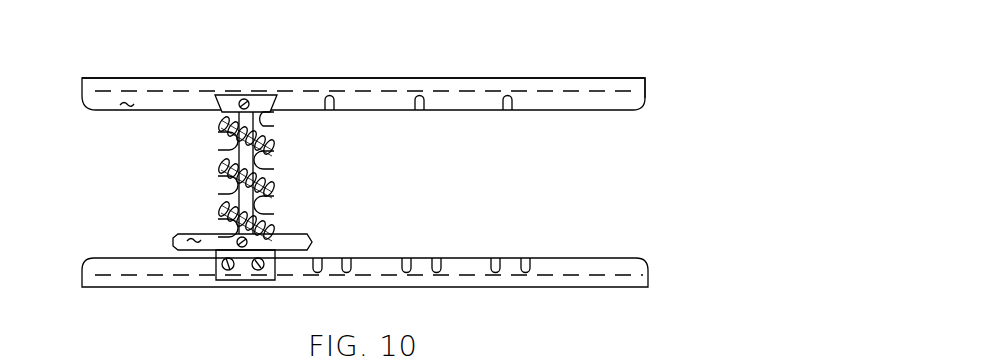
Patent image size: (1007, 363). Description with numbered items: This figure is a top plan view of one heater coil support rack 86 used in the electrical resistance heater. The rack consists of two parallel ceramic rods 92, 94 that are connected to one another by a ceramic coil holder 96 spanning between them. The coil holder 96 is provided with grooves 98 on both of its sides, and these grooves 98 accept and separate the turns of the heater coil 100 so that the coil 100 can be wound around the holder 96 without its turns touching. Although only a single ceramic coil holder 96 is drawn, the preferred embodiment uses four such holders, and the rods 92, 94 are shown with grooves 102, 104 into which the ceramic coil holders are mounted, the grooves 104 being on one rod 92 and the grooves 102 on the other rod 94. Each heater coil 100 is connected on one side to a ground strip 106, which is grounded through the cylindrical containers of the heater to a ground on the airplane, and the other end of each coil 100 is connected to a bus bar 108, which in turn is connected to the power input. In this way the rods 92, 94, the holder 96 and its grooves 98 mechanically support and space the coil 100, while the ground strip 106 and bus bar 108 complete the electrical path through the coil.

The connector assembly 86 is at (645, 76).
The ceramic rod 92 is at (648, 111).
The ceramic rod 94 is at (637, 289).
The ceramic coil holder 96 is at (262, 104).
The grooves 98 is at (222, 140).
The heater coil 100 is at (270, 144).
The grooves 102 is at (348, 257).
The grooves 104 is at (331, 112).
The ground strip 106 is at (127, 104).
The bus bar 108 is at (192, 239).